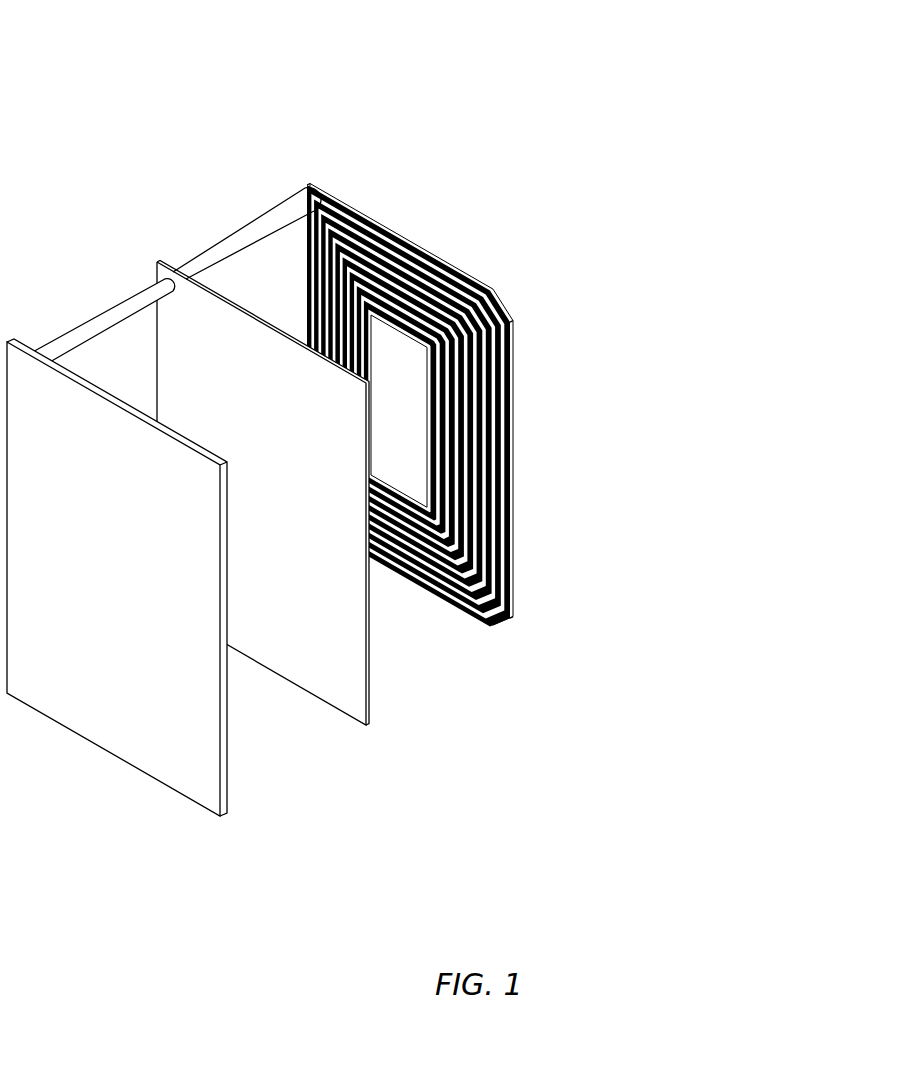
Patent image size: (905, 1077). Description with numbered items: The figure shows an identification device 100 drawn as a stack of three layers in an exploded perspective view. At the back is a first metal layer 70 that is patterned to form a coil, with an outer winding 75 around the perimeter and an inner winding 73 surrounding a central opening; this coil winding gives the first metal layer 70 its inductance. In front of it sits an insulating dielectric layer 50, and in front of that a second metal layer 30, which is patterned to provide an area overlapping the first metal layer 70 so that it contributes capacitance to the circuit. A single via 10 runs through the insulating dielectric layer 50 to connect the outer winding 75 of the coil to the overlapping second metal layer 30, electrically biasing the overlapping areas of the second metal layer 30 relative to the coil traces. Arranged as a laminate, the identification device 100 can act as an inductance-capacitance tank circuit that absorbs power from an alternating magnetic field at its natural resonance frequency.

The identification device 100 is at (140, 128).
The via 10 is at (252, 235).
The second metal layer 30 is at (160, 683).
The insulating dielectric layer 50 is at (307, 590).
The first metal layer 70 is at (412, 483).
The inner winding 73 is at (430, 437).
The outer winding 75 is at (512, 348).